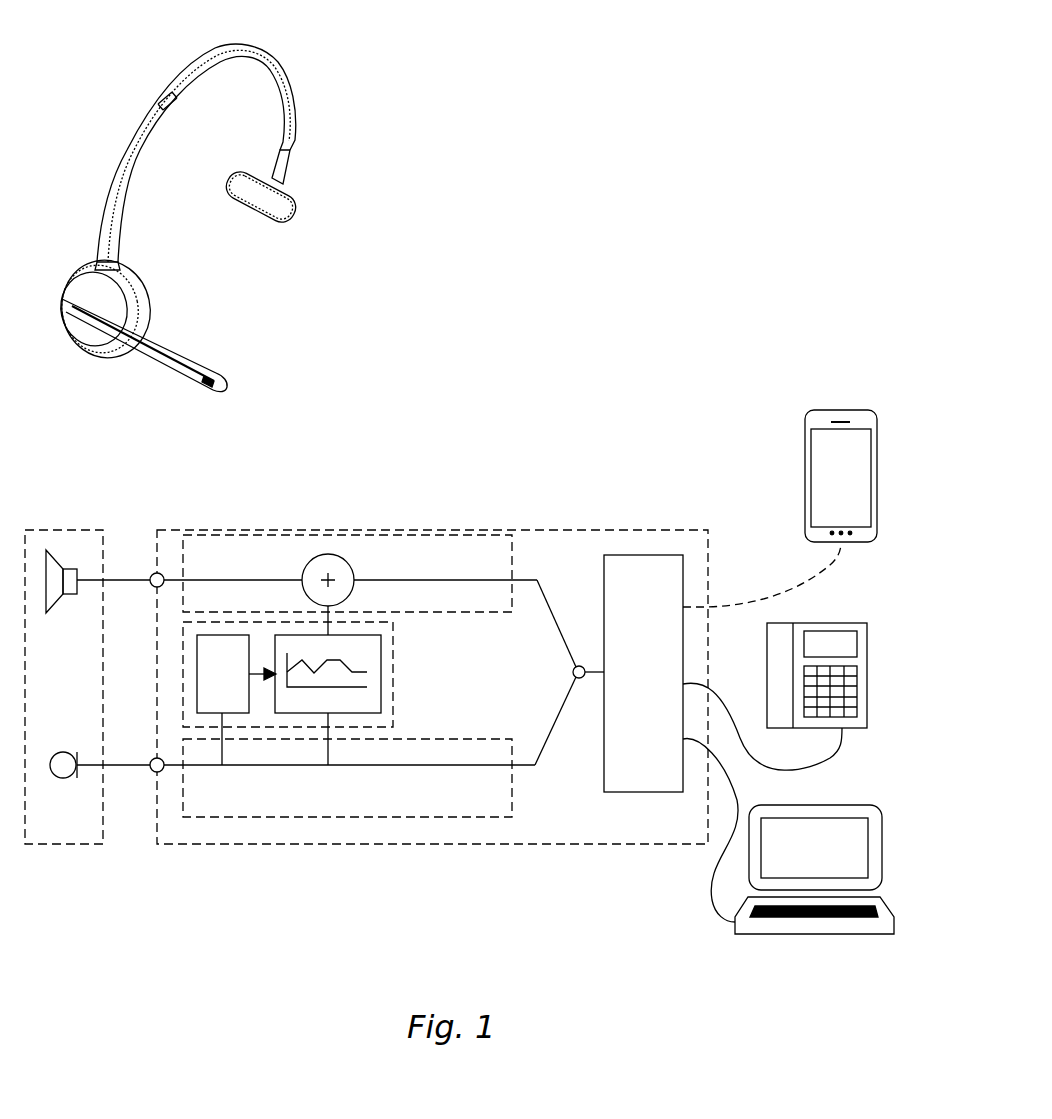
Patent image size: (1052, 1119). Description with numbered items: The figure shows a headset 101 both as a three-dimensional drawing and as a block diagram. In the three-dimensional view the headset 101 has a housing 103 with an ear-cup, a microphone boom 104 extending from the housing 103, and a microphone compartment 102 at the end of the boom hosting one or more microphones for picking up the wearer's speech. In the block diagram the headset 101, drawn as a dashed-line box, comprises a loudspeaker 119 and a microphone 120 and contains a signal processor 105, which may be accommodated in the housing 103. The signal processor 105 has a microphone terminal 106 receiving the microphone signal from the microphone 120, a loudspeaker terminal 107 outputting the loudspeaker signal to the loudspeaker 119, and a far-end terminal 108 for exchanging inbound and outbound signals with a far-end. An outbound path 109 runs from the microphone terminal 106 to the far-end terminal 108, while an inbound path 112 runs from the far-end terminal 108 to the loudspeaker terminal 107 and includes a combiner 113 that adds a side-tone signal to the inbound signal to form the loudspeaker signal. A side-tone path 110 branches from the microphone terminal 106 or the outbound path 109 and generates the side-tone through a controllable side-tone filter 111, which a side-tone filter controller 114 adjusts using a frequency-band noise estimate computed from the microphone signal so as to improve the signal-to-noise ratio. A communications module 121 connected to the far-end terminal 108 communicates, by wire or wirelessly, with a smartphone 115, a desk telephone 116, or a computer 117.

The headset 101 is at (151, 52).
The microphone compartment 102 is at (215, 363).
The housing 103 is at (125, 283).
The microphone boom 104 is at (157, 360).
The signal processor 105 is at (487, 528).
The microphone terminal 106 is at (160, 771).
The loudspeaker terminal 107 is at (160, 573).
The far-end terminal 108 is at (572, 672).
The outbound path 109 is at (441, 809).
The side-tone path 110 is at (393, 713).
The controllable side-tone filter 111 is at (382, 672).
The inbound path 112 is at (436, 569).
The combiner 113 is at (313, 557).
The side-tone filter controller 114 is at (240, 686).
The smartphone 115 is at (805, 447).
The desk telephone 116 is at (787, 622).
The computer 117 is at (818, 936).
The loudspeaker 119 is at (70, 597).
The microphone 120 is at (55, 775).
The communications module 121 is at (659, 686).